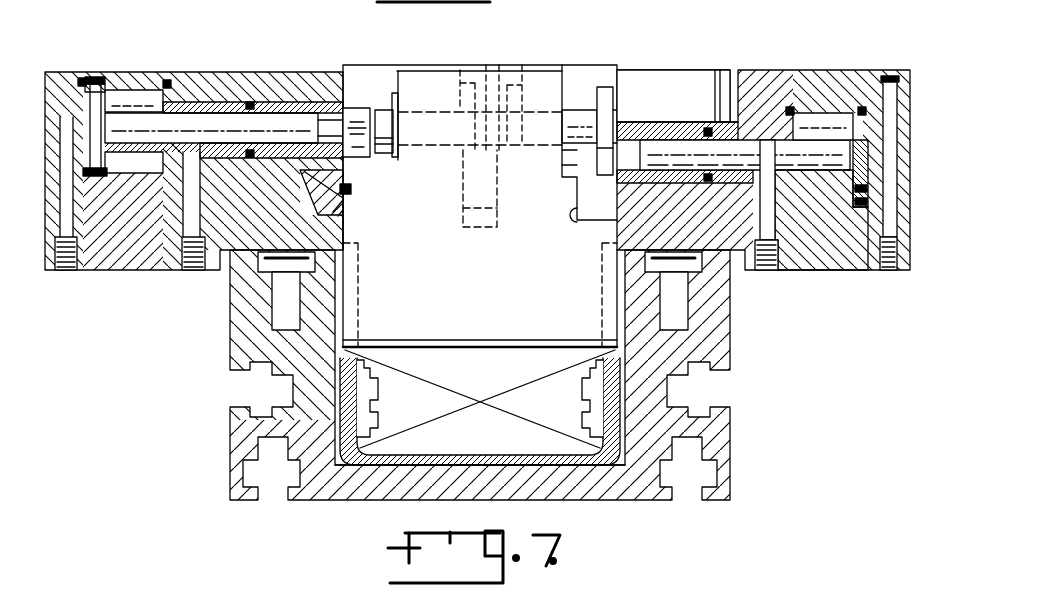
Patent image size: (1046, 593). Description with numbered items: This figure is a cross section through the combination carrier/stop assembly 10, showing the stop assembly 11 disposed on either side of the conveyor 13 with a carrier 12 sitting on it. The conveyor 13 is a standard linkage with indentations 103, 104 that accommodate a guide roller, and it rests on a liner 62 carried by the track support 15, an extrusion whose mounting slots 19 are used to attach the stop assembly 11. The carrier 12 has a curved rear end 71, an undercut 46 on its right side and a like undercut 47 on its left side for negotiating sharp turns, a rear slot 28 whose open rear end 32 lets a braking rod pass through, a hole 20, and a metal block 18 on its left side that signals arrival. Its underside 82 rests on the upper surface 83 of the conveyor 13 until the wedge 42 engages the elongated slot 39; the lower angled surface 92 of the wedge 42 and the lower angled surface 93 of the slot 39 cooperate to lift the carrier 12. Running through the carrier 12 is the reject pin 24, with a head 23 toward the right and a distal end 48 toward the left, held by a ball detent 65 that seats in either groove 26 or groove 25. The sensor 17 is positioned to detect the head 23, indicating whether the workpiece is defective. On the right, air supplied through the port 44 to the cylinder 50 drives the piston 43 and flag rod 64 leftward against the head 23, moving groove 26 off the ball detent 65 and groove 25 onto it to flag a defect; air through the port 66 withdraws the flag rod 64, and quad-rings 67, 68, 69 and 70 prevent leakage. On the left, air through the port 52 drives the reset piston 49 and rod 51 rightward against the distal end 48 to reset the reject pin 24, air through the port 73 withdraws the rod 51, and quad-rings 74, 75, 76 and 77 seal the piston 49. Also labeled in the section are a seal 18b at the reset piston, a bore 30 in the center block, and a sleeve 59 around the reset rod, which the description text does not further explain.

The combination carrier/stop assembly 10 is at (341, 42).
The stop assembly 11 is at (250, 98).
The carrier 12 is at (526, 55).
The conveyor 13 is at (443, 440).
The track support 15 is at (336, 510).
The sensor 17 is at (695, 67).
The metal block 18 is at (363, 107).
The piston seal 18b is at (360, 148).
The mounting slots 19 is at (283, 313).
The hole 20 is at (472, 67).
The head 23 is at (613, 70).
The reject pin 24 is at (603, 82).
The groove 25 is at (530, 67).
The groove 26 is at (488, 68).
The rear slot 28 is at (578, 100).
The cylinder bore 30 is at (430, 68).
The rear end 32 is at (579, 222).
The elongated slot 39 is at (353, 190).
The wedge 42 is at (350, 243).
The piston 43 is at (858, 208).
The port 44 is at (884, 270).
The undercut 46 is at (601, 284).
The undercut 47 is at (360, 308).
The distal end 48 is at (398, 92).
The piston 49 is at (96, 88).
The cylinder 50 is at (832, 188).
The rod 51 is at (225, 123).
The port 52 is at (66, 273).
The sleeve 59 is at (153, 88).
The liner 62 is at (578, 462).
The flag rod 64 is at (770, 147).
The ball detent 65 is at (497, 163).
The port 66 is at (758, 270).
The quad-ring 67 is at (862, 108).
The quad-ring 68 is at (881, 76).
The quad-ring 69 is at (788, 108).
The quad-ring 70 is at (708, 130).
The rear end 71 is at (496, 287).
The port 73 is at (197, 273).
The quad-ring 74 is at (83, 77).
The quad-ring 75 is at (101, 77).
The quad-ring 76 is at (166, 82).
The quad-ring 77 is at (254, 98).
The underside 82 is at (457, 350).
The upper surface 83 is at (493, 343).
The lower angled surface 92 is at (348, 207).
The lower angled surface 93 is at (355, 198).
The indentation 103 is at (374, 402).
The indentation 104 is at (587, 399).